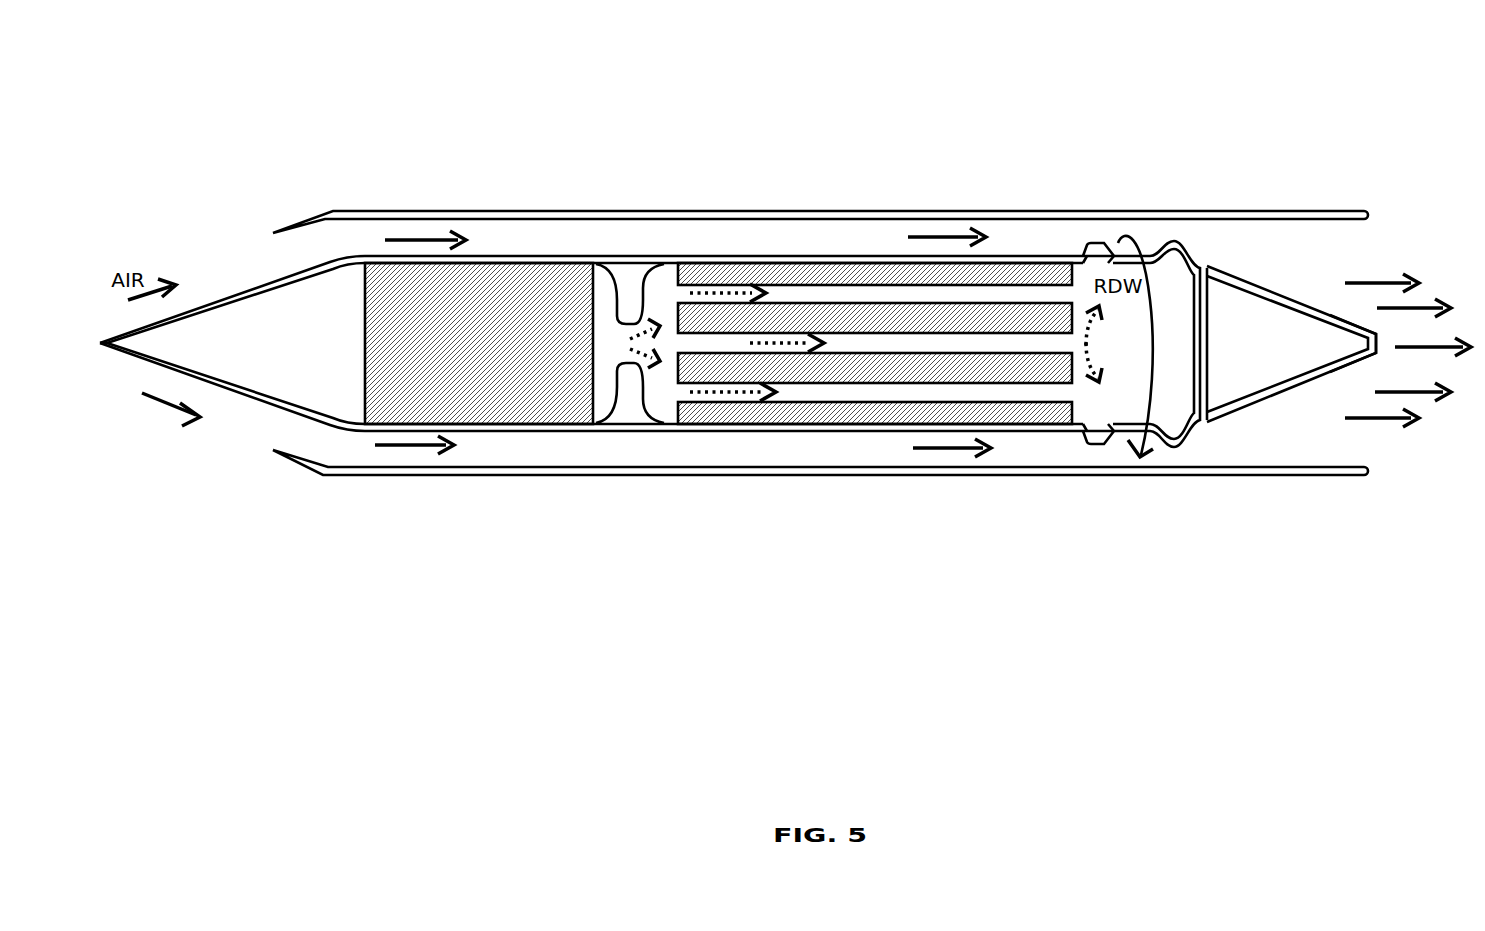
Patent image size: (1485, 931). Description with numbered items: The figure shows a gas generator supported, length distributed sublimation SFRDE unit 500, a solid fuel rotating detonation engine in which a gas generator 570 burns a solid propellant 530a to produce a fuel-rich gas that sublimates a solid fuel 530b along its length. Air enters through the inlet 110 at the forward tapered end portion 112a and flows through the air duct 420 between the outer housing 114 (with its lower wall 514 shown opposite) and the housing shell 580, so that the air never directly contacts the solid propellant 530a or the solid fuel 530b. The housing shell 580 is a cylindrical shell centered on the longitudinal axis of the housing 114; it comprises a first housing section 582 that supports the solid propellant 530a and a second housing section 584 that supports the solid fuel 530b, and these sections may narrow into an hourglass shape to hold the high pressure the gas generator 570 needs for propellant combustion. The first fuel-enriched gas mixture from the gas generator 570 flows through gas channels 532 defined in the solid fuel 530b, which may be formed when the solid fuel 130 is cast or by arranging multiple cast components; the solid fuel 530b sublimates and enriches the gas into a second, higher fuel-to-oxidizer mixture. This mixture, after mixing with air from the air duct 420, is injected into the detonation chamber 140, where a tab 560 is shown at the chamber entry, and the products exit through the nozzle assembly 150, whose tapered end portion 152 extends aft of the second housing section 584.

The inlet 110 is at (267, 262).
The forward tapered end portion 112a is at (222, 297).
The housing 114 is at (377, 210).
The outer bypass duct wall (lower) 514 is at (380, 477).
The air duct 420 is at (868, 245).
The gas generator supported, length distributed sublimation SFRDE unit 500 is at (757, 395).
The solid propellant 530a is at (490, 262).
The solid fuel 530b is at (713, 262).
The gas channels 532 is at (850, 340).
The gas generator 570 is at (607, 312).
The solid fuel 130 is at (708, 420).
The retaining tab 560 is at (1101, 247).
The detonation chamber 140 is at (1150, 240).
The nozzle assembly 150 is at (1272, 247).
The tapered end portion 152 is at (1322, 305).
The housing shell 580 is at (785, 432).
The first housing section 582 is at (477, 423).
The second housing section 584 is at (1057, 425).